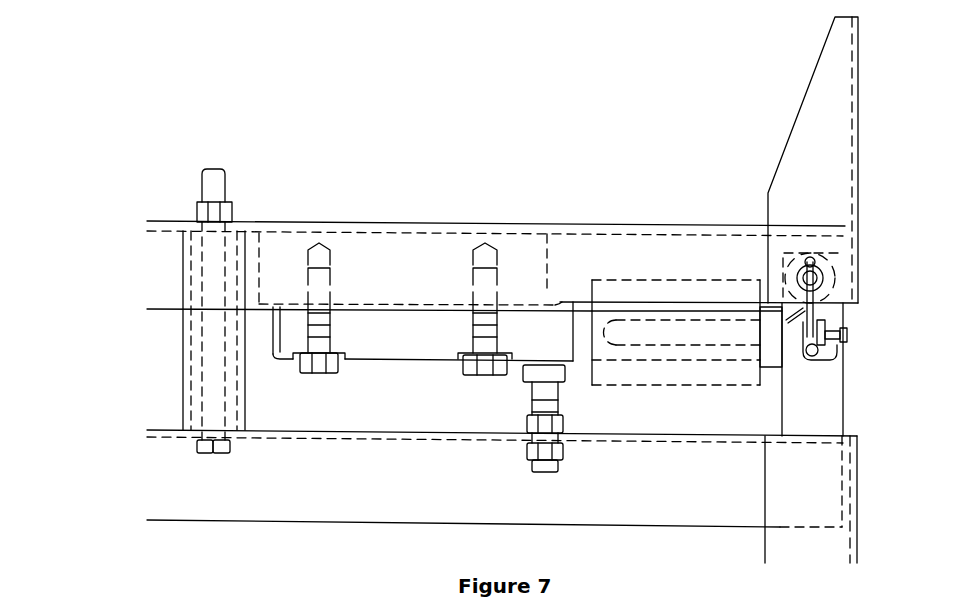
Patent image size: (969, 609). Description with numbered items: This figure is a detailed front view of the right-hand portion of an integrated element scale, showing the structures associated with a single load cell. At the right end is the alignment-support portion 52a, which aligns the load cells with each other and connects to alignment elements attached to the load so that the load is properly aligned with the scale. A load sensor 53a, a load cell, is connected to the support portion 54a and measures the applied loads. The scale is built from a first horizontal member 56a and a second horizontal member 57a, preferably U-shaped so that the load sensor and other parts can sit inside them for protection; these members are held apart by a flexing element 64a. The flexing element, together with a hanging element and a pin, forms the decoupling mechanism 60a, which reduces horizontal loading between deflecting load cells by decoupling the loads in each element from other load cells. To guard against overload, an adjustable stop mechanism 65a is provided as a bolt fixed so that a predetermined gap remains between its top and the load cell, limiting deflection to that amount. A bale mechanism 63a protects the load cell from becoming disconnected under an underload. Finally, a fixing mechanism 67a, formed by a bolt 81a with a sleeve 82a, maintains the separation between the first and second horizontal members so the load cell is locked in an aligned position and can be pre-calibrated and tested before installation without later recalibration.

The alignment-support portion 52a is at (778, 162).
The load sensor 53a is at (665, 388).
The support portion 54a is at (368, 430).
The first horizontal member 56a is at (626, 232).
The second horizontal member 57a is at (423, 492).
The decoupling mechanism 60a is at (856, 337).
The bale mechanism 63a is at (830, 355).
The flexing element 64a is at (782, 417).
The adjustable stop mechanism 65a is at (530, 388).
The fixing mechanism 67a is at (244, 412).
The bolt 81a is at (226, 184).
The sleeve 82a is at (185, 375).